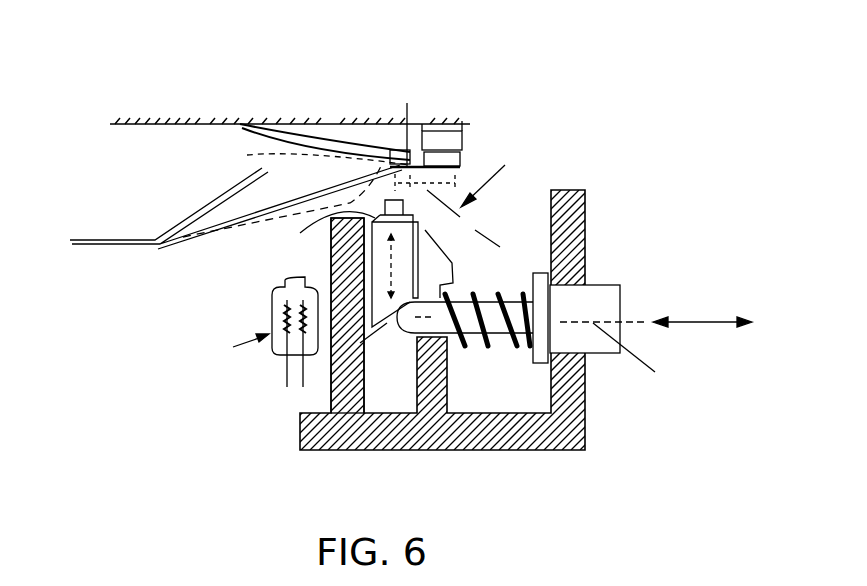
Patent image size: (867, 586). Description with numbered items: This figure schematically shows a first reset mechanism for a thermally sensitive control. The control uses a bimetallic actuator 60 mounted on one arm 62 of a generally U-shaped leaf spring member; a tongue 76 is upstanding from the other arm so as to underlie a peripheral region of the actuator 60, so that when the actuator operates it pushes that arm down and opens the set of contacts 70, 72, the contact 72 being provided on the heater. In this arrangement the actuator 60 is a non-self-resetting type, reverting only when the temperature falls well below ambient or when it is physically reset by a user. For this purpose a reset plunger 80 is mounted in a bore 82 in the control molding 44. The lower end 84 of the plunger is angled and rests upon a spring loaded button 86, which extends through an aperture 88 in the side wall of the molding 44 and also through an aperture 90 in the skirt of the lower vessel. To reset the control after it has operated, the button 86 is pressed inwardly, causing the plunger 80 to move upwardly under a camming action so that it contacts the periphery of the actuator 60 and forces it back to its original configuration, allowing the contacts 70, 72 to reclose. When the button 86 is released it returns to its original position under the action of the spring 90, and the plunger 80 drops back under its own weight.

The control molding 44 is at (368, 452).
The bimetallic actuator 60 is at (327, 134).
The arm of leaf spring member 62 is at (262, 168).
The contact 70 is at (458, 165).
The contact 72 is at (453, 133).
The tongue 76 is at (407, 103).
The reset plunger 80 is at (300, 233).
The bore 82 is at (350, 397).
The lower end of plunger 84 is at (350, 360).
The spring loaded button 86 is at (607, 297).
The aperture 88 is at (555, 287).
The spring 90 is at (500, 283).